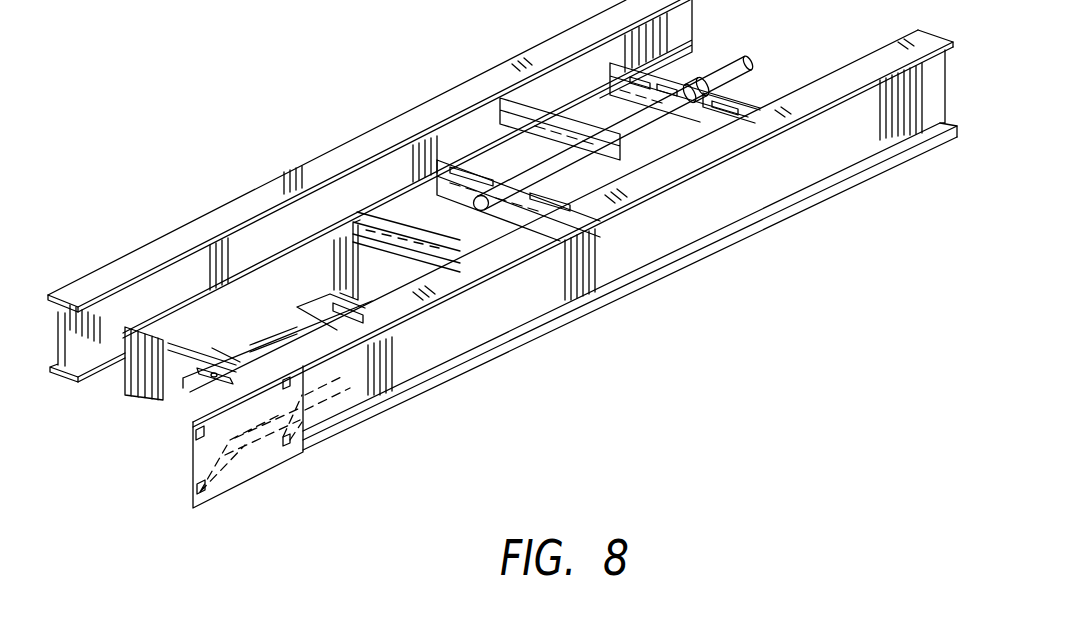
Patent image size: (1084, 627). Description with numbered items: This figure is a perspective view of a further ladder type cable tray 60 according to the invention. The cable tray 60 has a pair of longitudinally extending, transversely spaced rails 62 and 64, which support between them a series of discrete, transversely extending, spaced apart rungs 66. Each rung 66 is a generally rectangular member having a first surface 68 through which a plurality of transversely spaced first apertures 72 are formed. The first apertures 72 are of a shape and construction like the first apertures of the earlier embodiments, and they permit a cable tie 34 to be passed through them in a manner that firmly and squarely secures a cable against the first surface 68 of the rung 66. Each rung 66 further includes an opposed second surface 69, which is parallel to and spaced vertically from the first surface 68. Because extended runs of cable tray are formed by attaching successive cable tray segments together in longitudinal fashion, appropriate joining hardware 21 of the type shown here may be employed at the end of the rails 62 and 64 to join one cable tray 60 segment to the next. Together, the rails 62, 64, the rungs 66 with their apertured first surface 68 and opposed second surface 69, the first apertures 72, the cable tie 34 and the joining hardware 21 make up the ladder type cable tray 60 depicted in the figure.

The ladder type cable tray 60 is at (252, 128).
The rail 62 is at (120, 296).
The rail 64 is at (400, 363).
The rung 66 is at (682, 158).
The first surface 68 is at (546, 174).
The second surface 69 is at (407, 207).
The first apertures 72 is at (455, 165).
The cable tie 34 is at (700, 88).
The joining hardware 21 is at (247, 462).